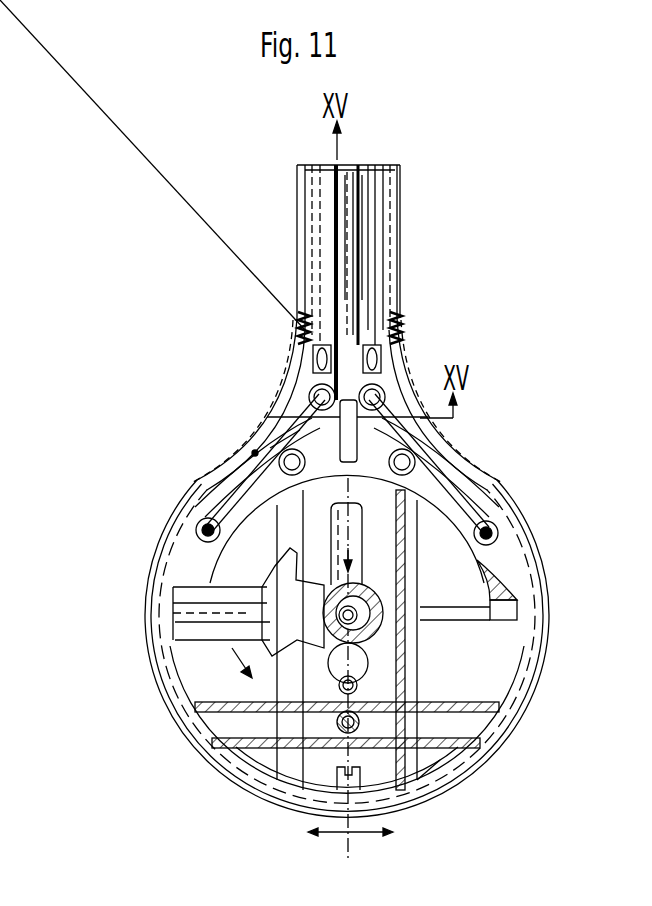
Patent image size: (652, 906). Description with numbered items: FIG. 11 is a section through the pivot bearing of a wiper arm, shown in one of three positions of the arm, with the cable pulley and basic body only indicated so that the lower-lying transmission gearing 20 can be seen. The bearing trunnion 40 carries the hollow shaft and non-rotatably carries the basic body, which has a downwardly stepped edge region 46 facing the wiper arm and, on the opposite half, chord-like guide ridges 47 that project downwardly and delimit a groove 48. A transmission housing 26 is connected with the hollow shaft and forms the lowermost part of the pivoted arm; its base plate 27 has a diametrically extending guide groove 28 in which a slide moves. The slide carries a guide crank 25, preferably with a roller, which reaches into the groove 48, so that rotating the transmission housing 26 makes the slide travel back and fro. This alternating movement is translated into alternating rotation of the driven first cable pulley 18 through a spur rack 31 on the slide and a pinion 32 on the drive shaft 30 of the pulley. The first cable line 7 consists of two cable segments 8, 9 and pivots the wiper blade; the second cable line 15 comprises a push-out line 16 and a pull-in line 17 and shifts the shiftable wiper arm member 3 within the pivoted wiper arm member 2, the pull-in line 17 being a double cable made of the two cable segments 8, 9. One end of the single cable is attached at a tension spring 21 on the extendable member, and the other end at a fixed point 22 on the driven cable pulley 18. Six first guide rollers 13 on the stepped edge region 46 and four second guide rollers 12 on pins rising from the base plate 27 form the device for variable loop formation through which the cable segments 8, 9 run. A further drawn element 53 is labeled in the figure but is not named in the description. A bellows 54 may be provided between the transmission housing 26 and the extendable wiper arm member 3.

The pivoted wiper arm member 2 is at (375, 290).
The shiftable wiper arm member 3 is at (367, 235).
The first cable line 7 is at (165, 643).
The cable segment 8 is at (225, 477).
The cable segment 9 is at (349, 166).
The second guide roller 12 is at (312, 388).
The first guide roller 13 is at (212, 540).
The second cable line 15 is at (309, 796).
The push-out line 16 is at (355, 220).
The pull-in line 17 is at (385, 165).
The driven first cable pulley 18 is at (338, 618).
The transmission gearing 20 is at (372, 667).
The tension spring 21 is at (365, 268).
The fixed point 22 is at (254, 451).
The guide crank 25 is at (420, 728).
The transmission housing 26 is at (362, 688).
The base plate 27 is at (487, 643).
The guide groove 28 is at (400, 752).
The drive shaft 30 is at (362, 614).
The spur rack 31 is at (333, 592).
The pinion 32 is at (330, 628).
The bearing trunnion 40 is at (386, 628).
The stepped edge region 46 is at (500, 575).
The guide ridge 47 is at (445, 746).
The groove 48 is at (470, 745).
The nut 53 is at (388, 362).
The bellows 54 is at (298, 246).